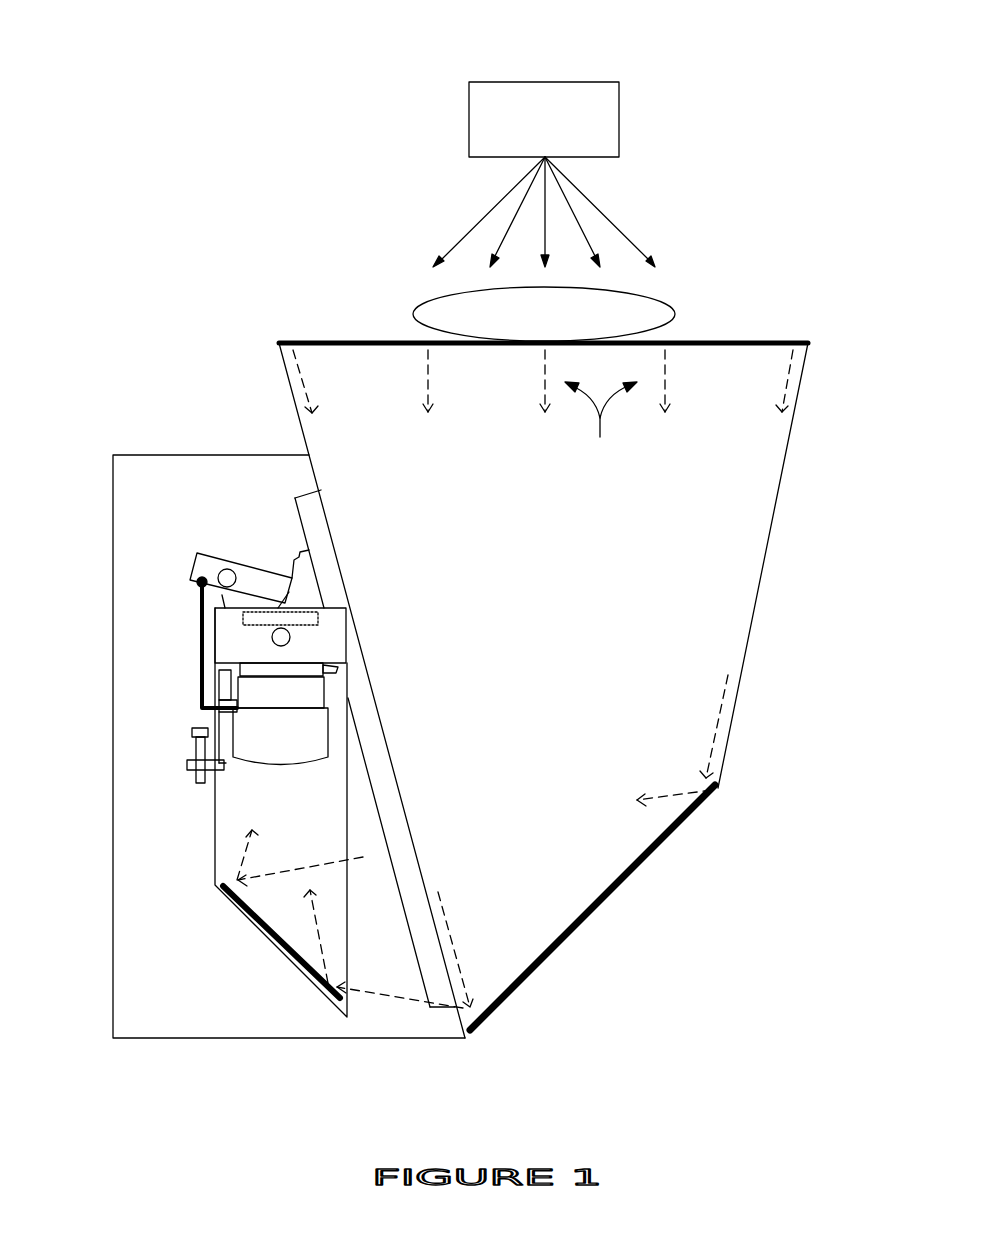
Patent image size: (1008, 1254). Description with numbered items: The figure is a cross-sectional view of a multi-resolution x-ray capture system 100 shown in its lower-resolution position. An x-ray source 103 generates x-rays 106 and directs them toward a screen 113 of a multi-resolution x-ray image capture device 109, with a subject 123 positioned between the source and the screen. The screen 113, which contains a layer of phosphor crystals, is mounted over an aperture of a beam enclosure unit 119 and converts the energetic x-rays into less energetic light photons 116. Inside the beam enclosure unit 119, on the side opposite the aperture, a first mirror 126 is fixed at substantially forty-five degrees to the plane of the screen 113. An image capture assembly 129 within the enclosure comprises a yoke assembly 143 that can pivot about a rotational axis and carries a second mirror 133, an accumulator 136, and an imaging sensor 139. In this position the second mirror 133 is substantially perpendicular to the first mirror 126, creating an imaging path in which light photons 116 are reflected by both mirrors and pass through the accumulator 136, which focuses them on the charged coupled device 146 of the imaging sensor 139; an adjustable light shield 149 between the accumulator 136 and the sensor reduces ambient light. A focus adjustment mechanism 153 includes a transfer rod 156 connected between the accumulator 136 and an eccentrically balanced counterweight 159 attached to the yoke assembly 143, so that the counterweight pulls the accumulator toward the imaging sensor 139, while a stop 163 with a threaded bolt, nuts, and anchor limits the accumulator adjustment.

The multi-resolution x-ray capture system 100 is at (375, 62).
The x-ray source 103 is at (526, 133).
The x-rays 106 is at (610, 200).
The multi-resolution x-ray image capture device 109 is at (512, 638).
The screen 113 is at (713, 343).
The light photons 116 is at (601, 425).
The beam enclosure unit 119 is at (282, 455).
The subject 123 is at (526, 328).
The first mirror 126 is at (598, 906).
The image capture assembly 129 is at (225, 495).
The second mirror 133 is at (288, 960).
The accumulator 136 is at (263, 747).
The imaging sensor 139 is at (342, 652).
The yoke assembly 143 is at (243, 812).
The charged coupled device 146 is at (313, 617).
The adjustable light shield 149 is at (324, 695).
The focus adjustment mechanism 153 is at (168, 598).
The transfer rod 156 is at (200, 625).
The counterweight 159 is at (272, 580).
The stop 163 is at (187, 748).